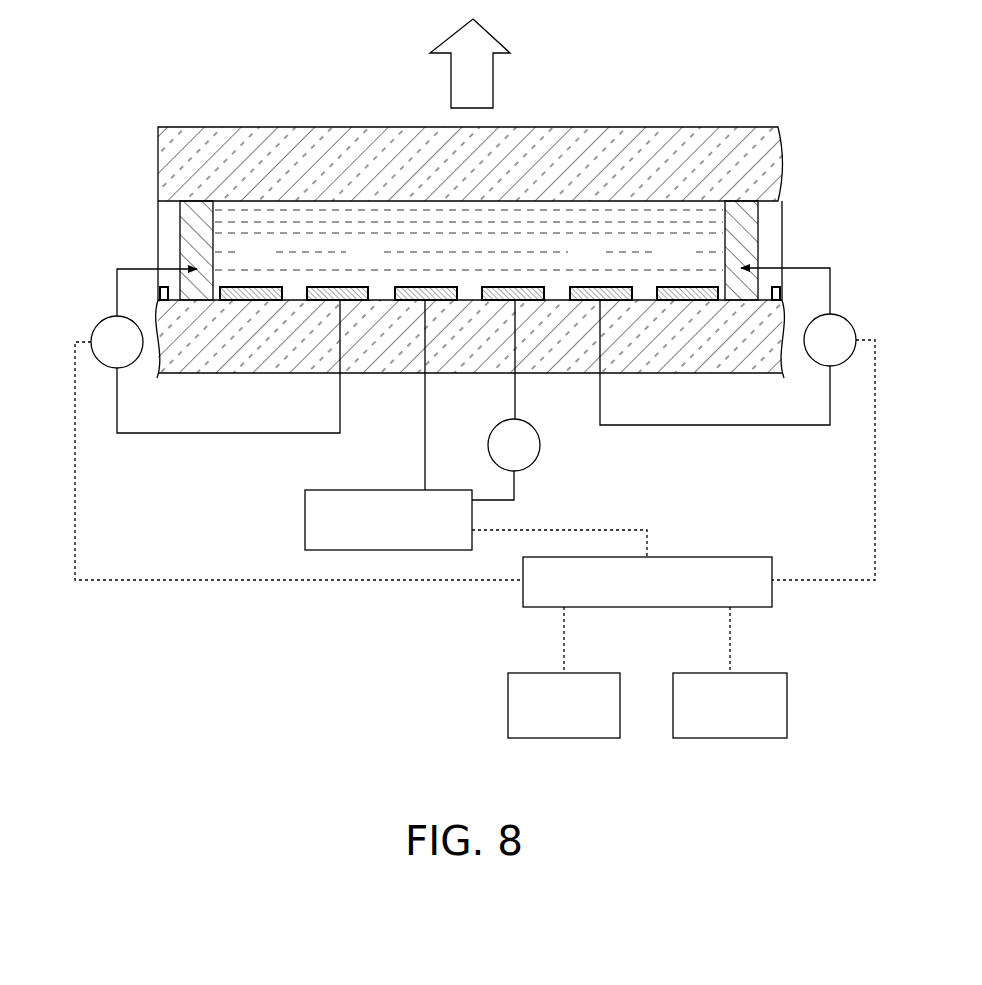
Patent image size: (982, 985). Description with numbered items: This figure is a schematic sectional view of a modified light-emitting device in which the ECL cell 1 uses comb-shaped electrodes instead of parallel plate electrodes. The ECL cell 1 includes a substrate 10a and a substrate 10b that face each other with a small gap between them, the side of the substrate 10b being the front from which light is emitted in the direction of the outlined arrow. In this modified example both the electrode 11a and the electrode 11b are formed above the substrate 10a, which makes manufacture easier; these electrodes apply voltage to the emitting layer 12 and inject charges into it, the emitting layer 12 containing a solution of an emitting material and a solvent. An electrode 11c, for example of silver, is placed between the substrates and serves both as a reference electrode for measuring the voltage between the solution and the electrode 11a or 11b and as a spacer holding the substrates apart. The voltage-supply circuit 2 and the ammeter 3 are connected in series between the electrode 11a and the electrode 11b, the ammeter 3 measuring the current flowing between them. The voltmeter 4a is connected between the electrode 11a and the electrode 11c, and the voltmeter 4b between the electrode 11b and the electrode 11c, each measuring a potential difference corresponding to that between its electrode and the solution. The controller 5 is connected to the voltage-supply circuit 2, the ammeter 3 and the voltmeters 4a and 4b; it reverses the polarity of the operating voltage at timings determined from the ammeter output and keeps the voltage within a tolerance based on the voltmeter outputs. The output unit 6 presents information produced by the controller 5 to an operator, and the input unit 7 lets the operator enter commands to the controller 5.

The ECL cell 1 is at (756, 126).
The voltage-supply circuit 2 is at (388, 489).
The ammeter 3 is at (535, 463).
The voltmeter 4a is at (101, 322).
The voltmeter 4b is at (840, 318).
The controller 5 is at (693, 557).
The output unit 6 is at (765, 673).
The input unit 7 is at (533, 673).
The substrate 10a is at (650, 368).
The substrate 10b is at (648, 148).
The electrode 11a is at (358, 287).
The electrode 11b is at (585, 287).
The electrode 11c is at (214, 257).
The emitting layer 12 is at (358, 233).